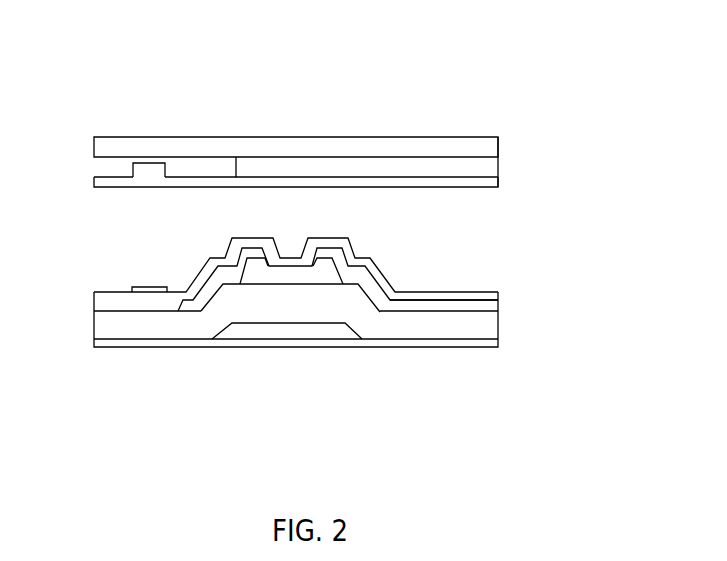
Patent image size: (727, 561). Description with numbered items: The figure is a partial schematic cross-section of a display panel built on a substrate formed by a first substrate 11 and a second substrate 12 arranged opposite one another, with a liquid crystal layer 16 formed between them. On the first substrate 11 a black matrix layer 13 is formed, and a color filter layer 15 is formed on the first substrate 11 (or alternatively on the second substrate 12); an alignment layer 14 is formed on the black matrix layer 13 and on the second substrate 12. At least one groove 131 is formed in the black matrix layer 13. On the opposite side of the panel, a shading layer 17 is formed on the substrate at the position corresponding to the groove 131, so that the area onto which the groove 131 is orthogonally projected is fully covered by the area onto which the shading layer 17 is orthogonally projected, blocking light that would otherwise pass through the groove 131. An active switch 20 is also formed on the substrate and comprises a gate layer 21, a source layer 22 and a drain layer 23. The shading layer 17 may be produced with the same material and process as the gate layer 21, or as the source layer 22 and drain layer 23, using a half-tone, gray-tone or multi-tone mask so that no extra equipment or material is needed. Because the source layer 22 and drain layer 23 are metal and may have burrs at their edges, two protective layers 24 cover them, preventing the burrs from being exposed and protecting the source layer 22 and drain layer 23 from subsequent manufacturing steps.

The first substrate 11 is at (273, 148).
The black matrix layer 13 is at (203, 170).
The groove 131 is at (145, 170).
The color filter layer 15 is at (335, 168).
The alignment layer 14 is at (408, 180).
The liquid crystal layer 16 is at (455, 222).
The second substrate 12 is at (468, 342).
The shading layer 17 is at (153, 290).
The active switch 20 is at (270, 314).
The gate layer 21 is at (314, 326).
The source layer 22 is at (200, 300).
The drain layer 23 is at (384, 300).
The protective layer 24 is at (438, 295).